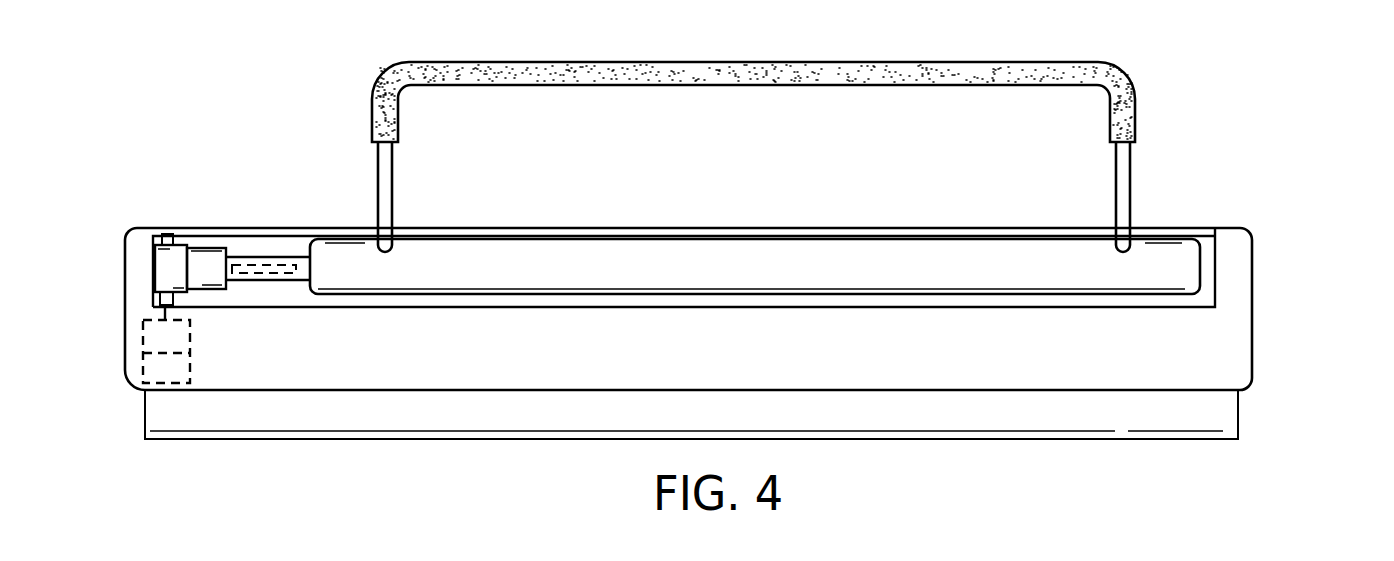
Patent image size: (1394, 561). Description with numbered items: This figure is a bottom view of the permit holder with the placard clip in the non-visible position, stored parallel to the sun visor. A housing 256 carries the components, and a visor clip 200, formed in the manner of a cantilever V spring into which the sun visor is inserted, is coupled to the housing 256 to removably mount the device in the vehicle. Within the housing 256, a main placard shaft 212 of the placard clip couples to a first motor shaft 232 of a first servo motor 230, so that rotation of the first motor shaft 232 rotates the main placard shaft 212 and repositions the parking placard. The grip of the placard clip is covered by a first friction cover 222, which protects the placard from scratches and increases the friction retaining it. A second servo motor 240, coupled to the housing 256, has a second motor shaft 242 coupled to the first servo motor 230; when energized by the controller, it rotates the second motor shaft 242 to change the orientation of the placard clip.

The visor clip 200 is at (1225, 423).
The main placard shaft 212 is at (782, 272).
The first friction cover 222 is at (900, 72).
The first servo motor 230 is at (202, 265).
The first motor shaft 232 is at (278, 265).
The second servo motor 240 is at (162, 342).
The second motor shaft 242 is at (165, 312).
The housing 256 is at (1252, 322).